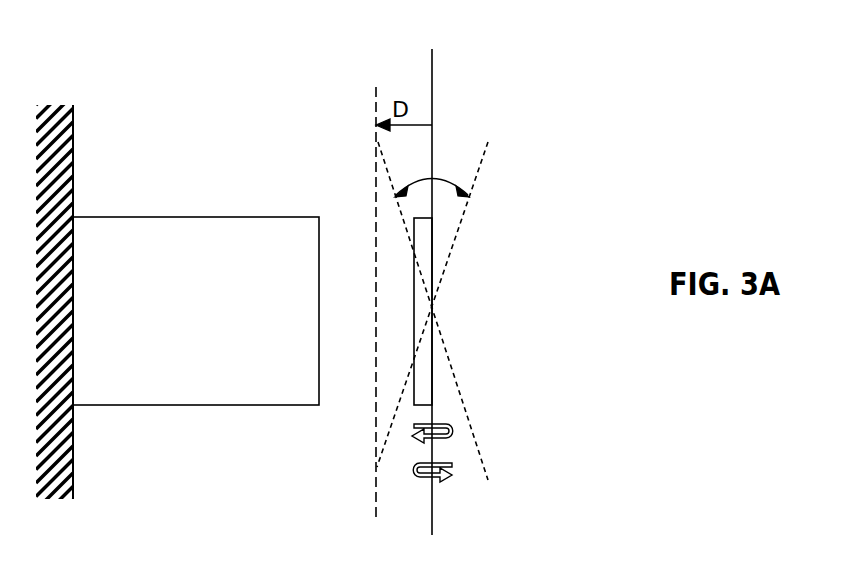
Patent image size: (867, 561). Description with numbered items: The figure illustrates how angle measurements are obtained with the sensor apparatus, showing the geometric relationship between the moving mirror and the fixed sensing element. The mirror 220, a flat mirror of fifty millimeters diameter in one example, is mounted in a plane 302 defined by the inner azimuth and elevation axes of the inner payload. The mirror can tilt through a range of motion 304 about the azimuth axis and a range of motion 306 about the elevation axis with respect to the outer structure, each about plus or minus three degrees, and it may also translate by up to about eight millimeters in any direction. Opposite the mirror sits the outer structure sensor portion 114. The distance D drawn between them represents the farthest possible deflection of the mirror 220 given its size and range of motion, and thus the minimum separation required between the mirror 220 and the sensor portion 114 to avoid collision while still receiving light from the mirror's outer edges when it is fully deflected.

The sensor portion 114 is at (196, 311).
The plane 302 is at (428, 70).
The range of motion about the elevation axis 306 is at (450, 175).
The mirror 220 is at (431, 308).
The range of motion about the azimuth axis 304 is at (451, 465).